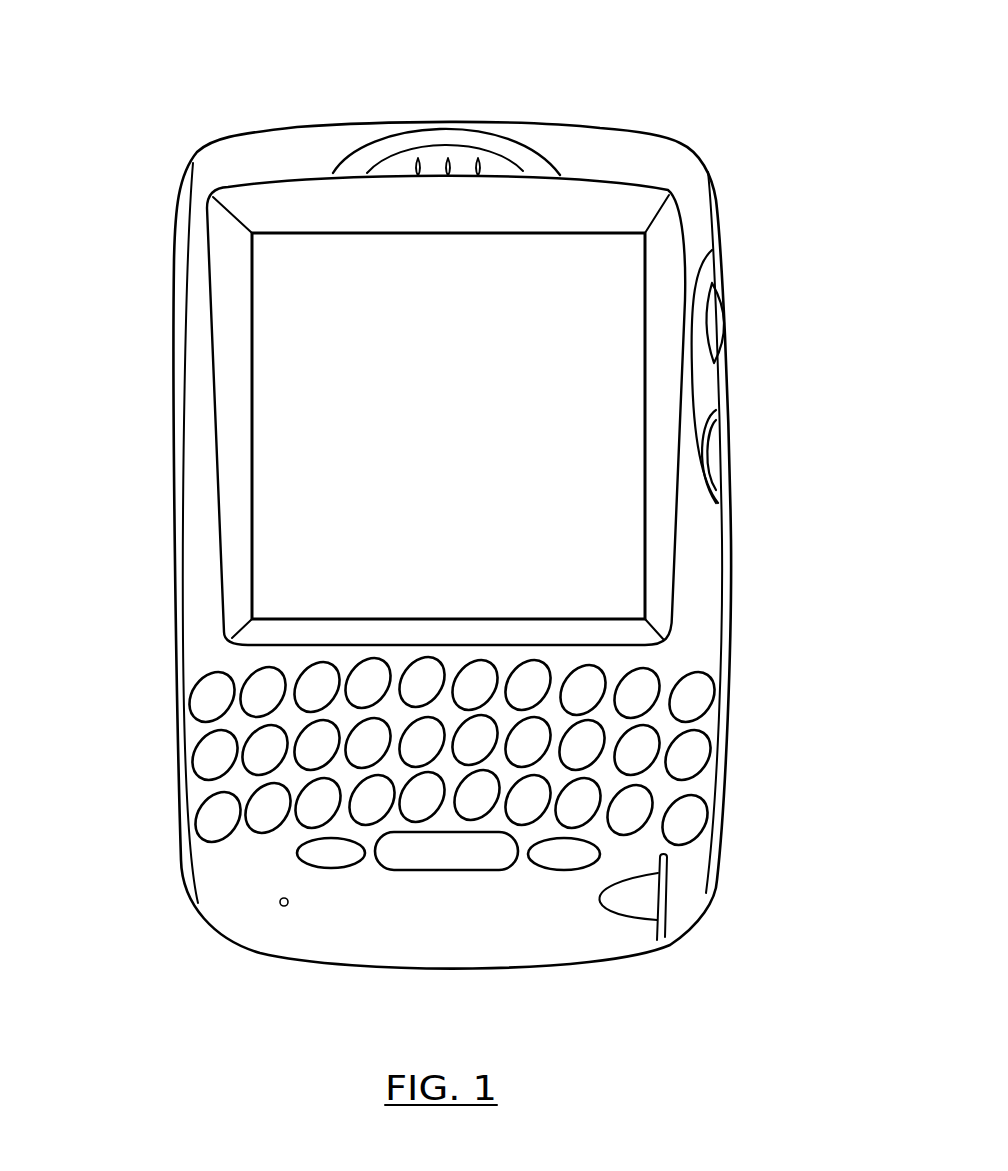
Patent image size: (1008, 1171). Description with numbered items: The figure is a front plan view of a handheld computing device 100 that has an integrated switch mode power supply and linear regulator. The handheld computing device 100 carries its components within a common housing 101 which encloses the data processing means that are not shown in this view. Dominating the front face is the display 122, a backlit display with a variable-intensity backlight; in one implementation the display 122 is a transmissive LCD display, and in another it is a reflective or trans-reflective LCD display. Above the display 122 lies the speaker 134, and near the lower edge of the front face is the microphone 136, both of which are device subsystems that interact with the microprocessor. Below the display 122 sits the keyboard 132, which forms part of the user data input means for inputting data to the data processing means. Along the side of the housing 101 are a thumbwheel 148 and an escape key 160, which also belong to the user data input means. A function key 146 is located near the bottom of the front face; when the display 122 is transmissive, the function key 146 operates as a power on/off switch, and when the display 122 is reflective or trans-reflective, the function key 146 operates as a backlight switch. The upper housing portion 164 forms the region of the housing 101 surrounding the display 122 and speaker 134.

The handheld computing device 100 is at (160, 162).
The housing 101 is at (297, 127).
The display 122 is at (645, 533).
The keyboard 132 is at (755, 658).
The speaker 134 is at (448, 176).
The microphone 136 is at (282, 907).
The function key 146 is at (617, 917).
The thumbwheel 148 is at (730, 317).
The escape key 160 is at (715, 437).
The upper housing portion 164 is at (675, 160).